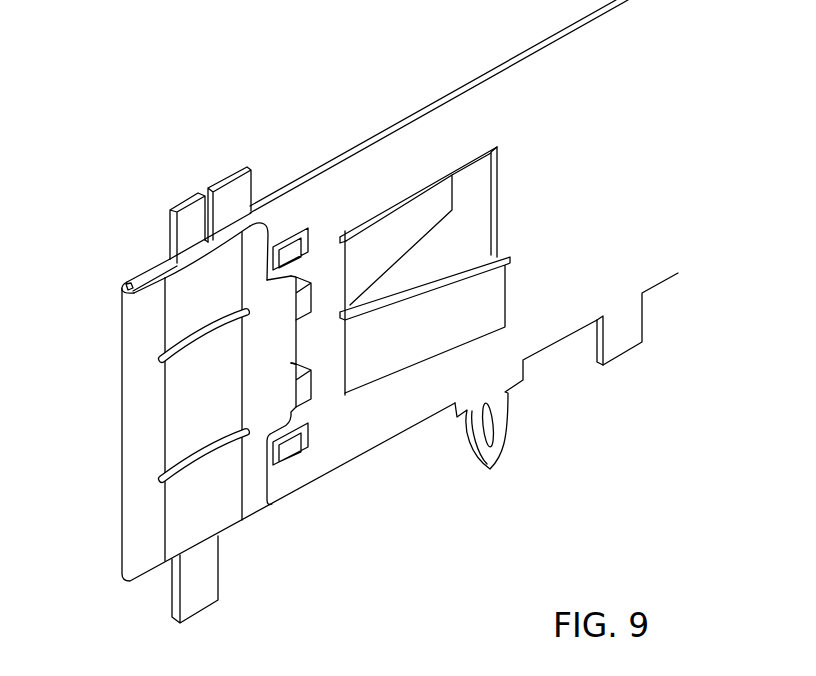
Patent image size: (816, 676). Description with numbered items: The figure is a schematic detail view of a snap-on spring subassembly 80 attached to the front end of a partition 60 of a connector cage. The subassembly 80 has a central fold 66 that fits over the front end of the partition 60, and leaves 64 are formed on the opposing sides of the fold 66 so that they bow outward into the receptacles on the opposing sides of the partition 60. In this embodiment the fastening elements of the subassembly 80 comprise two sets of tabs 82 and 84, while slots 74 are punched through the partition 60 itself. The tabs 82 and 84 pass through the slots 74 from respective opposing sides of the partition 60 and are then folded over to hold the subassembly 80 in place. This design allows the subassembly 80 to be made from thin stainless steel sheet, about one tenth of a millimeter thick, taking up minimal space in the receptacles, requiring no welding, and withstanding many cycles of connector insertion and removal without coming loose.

The partition 60 is at (442, 98).
The leaves 64 is at (170, 418).
The central fold 66 is at (120, 350).
The slots 74 is at (300, 240).
The snap-on spring subassembly 80 is at (263, 512).
The tabs 82 is at (280, 230).
The tabs 84 is at (308, 398).